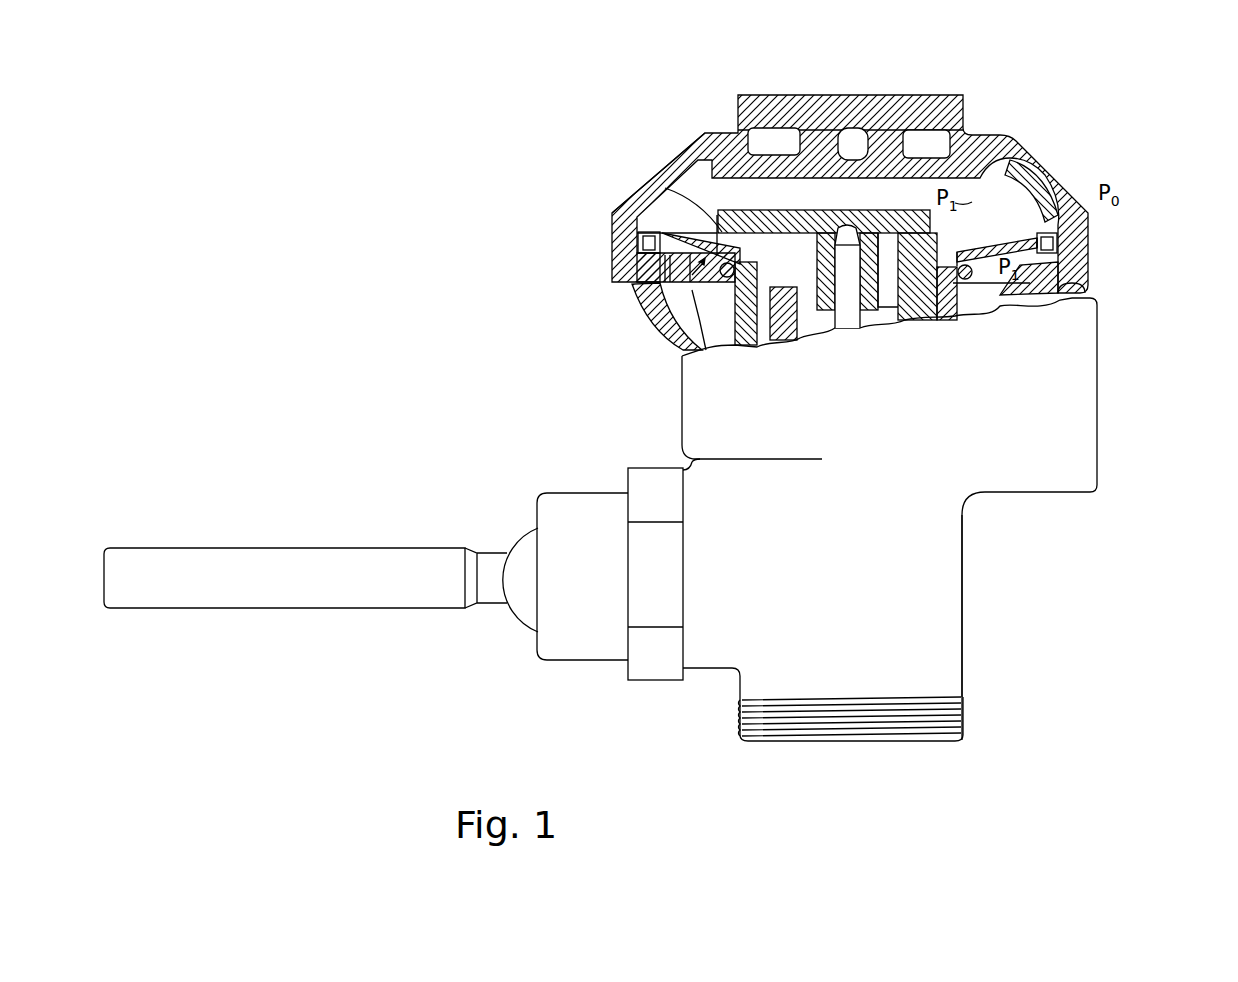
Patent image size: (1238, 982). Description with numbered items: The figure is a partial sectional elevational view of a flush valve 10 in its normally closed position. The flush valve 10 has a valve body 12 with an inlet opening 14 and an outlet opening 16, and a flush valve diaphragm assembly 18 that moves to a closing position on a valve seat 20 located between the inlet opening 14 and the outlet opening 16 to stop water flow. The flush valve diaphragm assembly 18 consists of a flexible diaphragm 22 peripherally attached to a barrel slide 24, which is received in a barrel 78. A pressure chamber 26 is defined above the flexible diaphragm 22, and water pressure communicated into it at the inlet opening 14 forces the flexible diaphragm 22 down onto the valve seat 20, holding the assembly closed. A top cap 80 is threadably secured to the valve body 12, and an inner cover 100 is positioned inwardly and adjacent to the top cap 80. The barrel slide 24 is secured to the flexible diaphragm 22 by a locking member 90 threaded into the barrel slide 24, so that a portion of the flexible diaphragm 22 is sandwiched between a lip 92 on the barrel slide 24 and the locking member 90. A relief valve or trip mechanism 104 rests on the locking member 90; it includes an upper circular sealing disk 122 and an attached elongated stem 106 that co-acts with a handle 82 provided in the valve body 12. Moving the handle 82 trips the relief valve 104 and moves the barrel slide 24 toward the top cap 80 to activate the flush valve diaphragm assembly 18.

The flush valve 10 is at (1103, 385).
The valve body 12 is at (963, 595).
The inlet opening 14 is at (1100, 348).
The outlet opening 16 is at (760, 738).
The flush valve diaphragm assembly 18 is at (680, 285).
The valve seat 20 is at (978, 258).
The flexible diaphragm 22 is at (645, 258).
The barrel slide 24 is at (790, 330).
The pressure chamber 26 is at (985, 190).
The barrel 78 is at (728, 352).
The top cap 80 is at (1040, 177).
The handle 82 is at (470, 548).
The locking member 90 is at (722, 230).
The lip 92 is at (770, 348).
The inner cover 100 is at (640, 188).
The relief valve or trip mechanism 104 is at (918, 194).
The elongated stem 106 is at (851, 318).
The upper circular sealing disk 122 is at (805, 210).